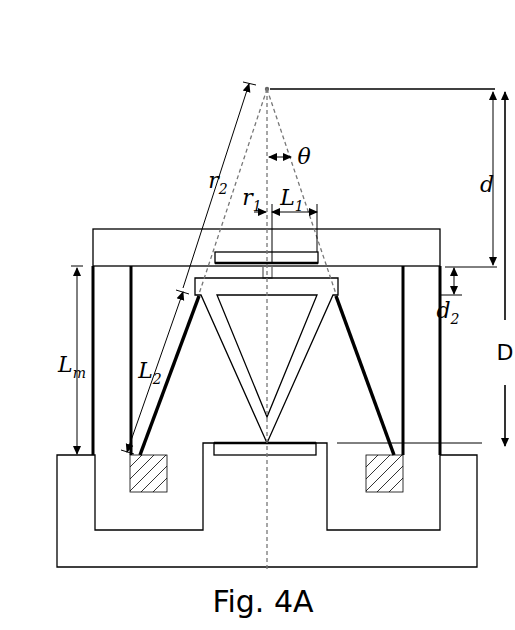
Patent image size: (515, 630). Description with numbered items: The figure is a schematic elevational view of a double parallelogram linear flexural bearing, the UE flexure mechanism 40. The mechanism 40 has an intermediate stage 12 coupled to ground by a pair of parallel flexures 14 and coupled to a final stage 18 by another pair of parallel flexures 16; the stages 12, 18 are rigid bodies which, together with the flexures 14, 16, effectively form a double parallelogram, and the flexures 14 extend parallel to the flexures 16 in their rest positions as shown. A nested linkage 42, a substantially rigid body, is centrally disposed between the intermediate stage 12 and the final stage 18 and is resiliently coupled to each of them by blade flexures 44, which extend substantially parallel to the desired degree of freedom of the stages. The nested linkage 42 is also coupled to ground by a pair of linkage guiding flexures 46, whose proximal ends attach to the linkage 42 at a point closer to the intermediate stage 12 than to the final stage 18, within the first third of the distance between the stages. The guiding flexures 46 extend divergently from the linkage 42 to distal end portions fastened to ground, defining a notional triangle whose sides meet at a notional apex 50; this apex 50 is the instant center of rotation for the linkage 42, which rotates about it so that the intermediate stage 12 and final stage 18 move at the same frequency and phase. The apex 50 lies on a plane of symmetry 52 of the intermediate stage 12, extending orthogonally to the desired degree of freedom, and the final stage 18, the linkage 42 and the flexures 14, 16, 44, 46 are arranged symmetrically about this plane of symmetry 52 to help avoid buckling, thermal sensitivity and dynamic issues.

The UE flexure mechanism 40 is at (146, 88).
The intermediate stage 12 is at (149, 261).
The parallel flexures 14 is at (131, 337).
The parallel flexures 16 is at (93, 425).
The final stage 18 is at (198, 556).
The nested linkage 42 is at (283, 386).
The blade flexures 44 is at (245, 263).
The linkage guiding flexures 46 is at (378, 408).
The notional apex 50 is at (268, 87).
The plane of symmetry 52 is at (268, 140).